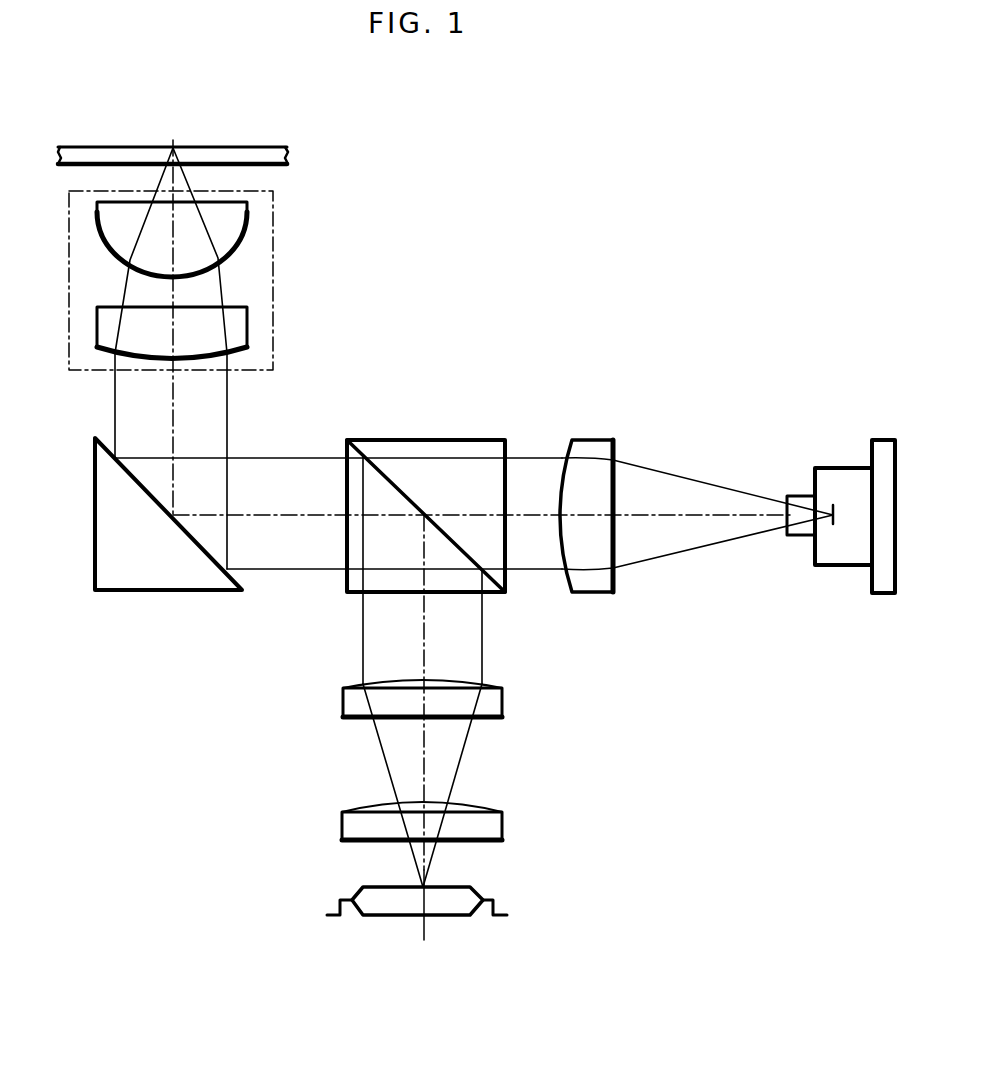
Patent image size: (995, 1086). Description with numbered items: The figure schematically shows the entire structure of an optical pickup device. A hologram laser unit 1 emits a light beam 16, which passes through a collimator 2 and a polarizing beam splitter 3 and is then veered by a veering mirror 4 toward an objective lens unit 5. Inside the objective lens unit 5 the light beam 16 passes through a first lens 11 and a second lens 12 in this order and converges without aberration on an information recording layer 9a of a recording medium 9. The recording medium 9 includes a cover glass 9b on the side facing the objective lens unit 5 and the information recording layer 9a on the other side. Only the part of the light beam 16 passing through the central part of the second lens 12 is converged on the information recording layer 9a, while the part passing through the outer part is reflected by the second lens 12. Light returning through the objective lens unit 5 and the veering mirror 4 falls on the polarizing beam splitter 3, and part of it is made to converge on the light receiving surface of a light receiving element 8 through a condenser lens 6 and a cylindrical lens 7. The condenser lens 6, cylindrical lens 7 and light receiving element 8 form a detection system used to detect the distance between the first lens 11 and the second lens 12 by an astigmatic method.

The hologram laser unit 1 is at (850, 467).
The collimator 2 is at (587, 438).
The polarizing beam splitter 3 is at (445, 438).
The veering mirror 4 is at (153, 593).
The objective lens unit 5 is at (214, 280).
The condenser lens 6 is at (505, 708).
The cylindrical lens 7 is at (502, 825).
The light receiving element 8 is at (483, 892).
The recording medium 9 is at (205, 148).
The information recording layer 9a is at (248, 145).
The cover glass 9b is at (267, 168).
The first lens 11 is at (240, 315).
The second lens 12 is at (238, 212).
The light beam 16 is at (660, 470).